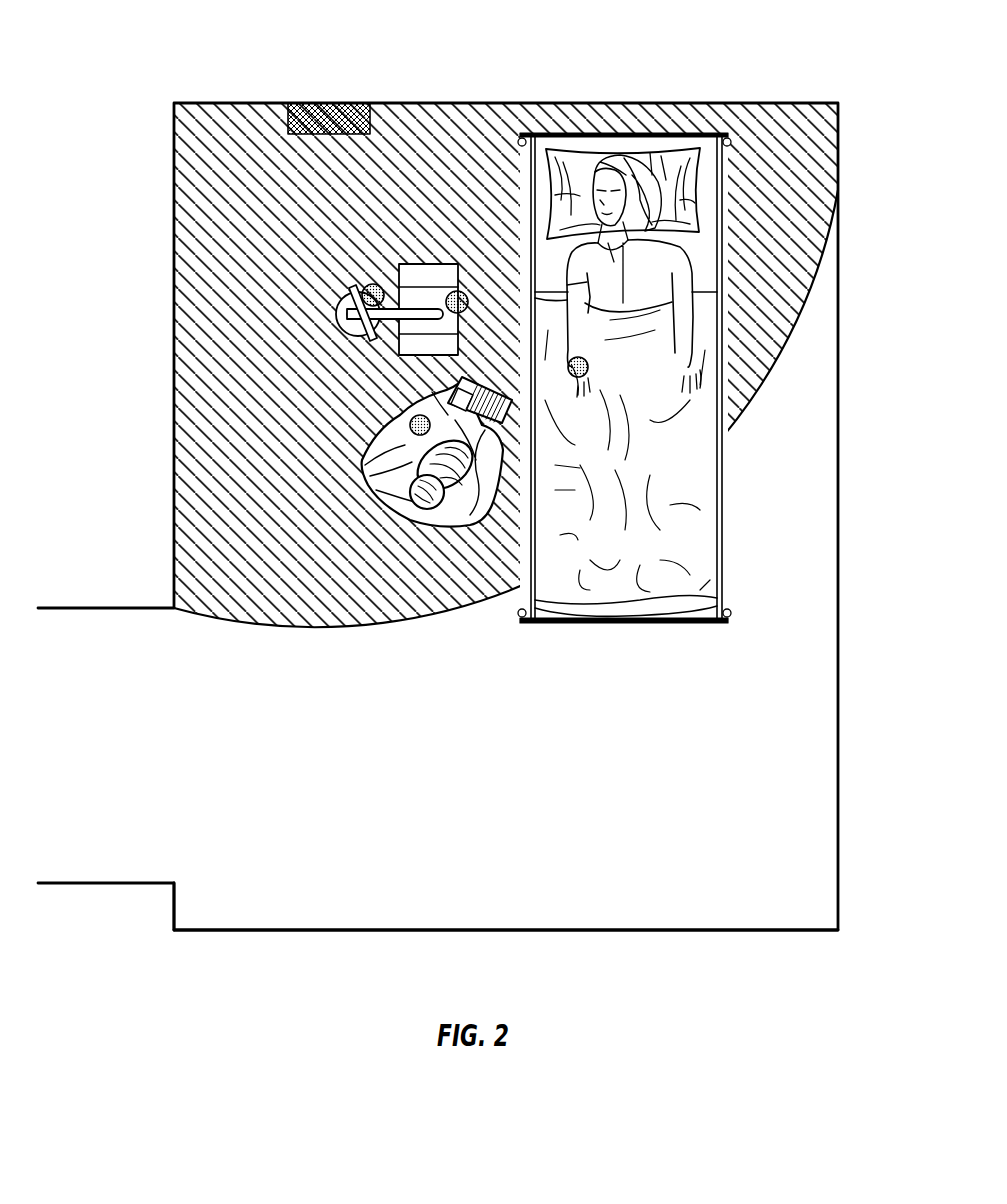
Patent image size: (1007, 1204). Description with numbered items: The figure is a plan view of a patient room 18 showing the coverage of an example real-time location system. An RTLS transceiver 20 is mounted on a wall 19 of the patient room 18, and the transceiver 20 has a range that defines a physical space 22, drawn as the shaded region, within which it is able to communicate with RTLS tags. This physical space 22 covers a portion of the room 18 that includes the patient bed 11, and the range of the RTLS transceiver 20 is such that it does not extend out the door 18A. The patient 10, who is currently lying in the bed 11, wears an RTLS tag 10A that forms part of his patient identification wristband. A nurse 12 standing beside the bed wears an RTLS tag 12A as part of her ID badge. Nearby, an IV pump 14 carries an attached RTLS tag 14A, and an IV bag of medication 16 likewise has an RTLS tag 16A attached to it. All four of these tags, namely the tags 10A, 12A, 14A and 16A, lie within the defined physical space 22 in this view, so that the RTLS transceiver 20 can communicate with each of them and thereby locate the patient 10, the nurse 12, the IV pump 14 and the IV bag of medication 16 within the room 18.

The patient 10 is at (655, 265).
The RTLS tag 10A is at (590, 370).
The patient bed 11 is at (703, 183).
The nurse 12 is at (468, 540).
The RTLS tag 12A is at (410, 430).
The IV pump 14 is at (417, 327).
The RTLS tag 14A is at (457, 291).
The IV bag of medication 16 is at (348, 300).
The RTLS tag 16A is at (372, 284).
The patient room 18 is at (482, 908).
The door 18A is at (170, 781).
The wall 19 is at (226, 103).
The RTLS transceiver 20 is at (318, 110).
The physical space 22 is at (205, 338).